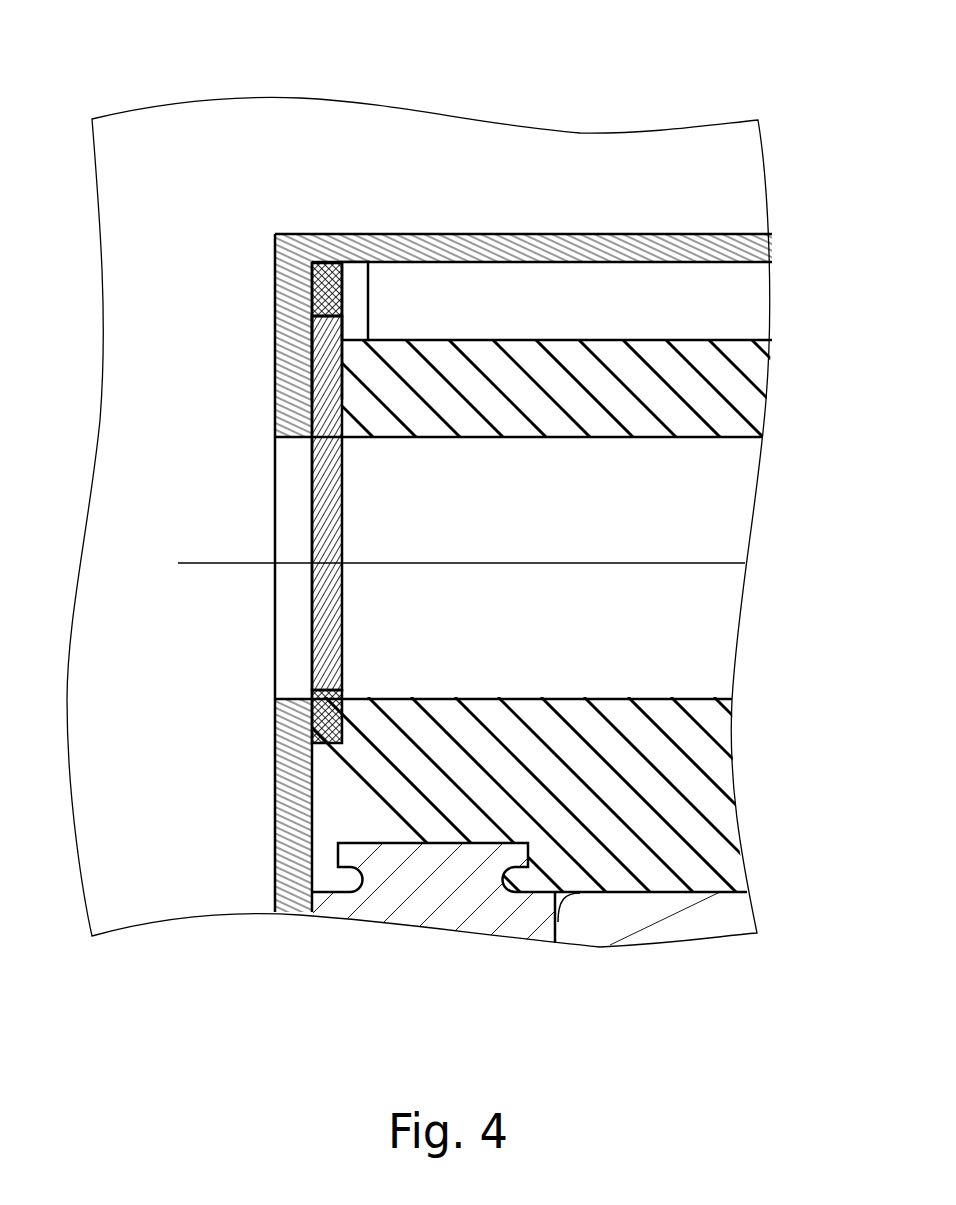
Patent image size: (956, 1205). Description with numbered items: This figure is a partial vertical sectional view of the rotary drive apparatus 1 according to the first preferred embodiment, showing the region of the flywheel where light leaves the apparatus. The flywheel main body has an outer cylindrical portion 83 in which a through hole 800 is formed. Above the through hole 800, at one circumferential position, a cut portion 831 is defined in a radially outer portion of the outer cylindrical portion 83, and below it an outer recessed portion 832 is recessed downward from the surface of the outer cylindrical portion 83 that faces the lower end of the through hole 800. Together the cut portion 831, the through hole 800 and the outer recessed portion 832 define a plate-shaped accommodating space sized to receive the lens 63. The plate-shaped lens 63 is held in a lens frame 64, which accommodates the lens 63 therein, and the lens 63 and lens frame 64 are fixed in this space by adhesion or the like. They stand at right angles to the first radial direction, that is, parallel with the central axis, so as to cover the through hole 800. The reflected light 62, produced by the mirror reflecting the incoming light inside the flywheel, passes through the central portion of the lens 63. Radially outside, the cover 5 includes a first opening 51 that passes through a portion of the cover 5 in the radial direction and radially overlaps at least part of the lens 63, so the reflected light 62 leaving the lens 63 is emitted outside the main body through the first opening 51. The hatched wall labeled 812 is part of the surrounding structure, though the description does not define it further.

The rotary drive apparatus 1 is at (531, 188).
The cover 5 is at (727, 250).
The first opening 51 is at (297, 531).
The reflected light 62 is at (423, 564).
The lens 63 is at (323, 500).
The lens frame 64 is at (327, 293).
The outer cylindrical portion 83 is at (357, 297).
The wall portion 812 is at (625, 380).
The cut portion 831 is at (330, 358).
The outer recessed portion 832 is at (326, 714).
The through hole 800 is at (335, 618).